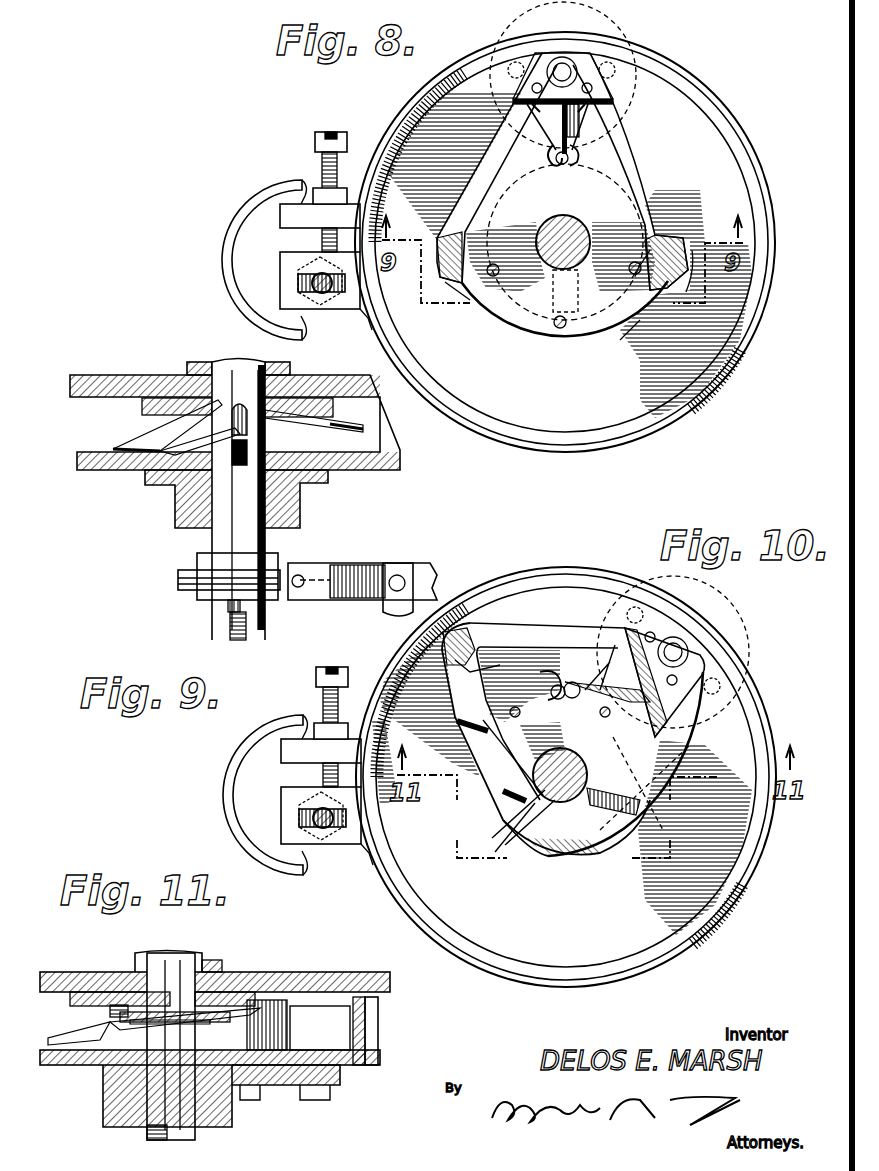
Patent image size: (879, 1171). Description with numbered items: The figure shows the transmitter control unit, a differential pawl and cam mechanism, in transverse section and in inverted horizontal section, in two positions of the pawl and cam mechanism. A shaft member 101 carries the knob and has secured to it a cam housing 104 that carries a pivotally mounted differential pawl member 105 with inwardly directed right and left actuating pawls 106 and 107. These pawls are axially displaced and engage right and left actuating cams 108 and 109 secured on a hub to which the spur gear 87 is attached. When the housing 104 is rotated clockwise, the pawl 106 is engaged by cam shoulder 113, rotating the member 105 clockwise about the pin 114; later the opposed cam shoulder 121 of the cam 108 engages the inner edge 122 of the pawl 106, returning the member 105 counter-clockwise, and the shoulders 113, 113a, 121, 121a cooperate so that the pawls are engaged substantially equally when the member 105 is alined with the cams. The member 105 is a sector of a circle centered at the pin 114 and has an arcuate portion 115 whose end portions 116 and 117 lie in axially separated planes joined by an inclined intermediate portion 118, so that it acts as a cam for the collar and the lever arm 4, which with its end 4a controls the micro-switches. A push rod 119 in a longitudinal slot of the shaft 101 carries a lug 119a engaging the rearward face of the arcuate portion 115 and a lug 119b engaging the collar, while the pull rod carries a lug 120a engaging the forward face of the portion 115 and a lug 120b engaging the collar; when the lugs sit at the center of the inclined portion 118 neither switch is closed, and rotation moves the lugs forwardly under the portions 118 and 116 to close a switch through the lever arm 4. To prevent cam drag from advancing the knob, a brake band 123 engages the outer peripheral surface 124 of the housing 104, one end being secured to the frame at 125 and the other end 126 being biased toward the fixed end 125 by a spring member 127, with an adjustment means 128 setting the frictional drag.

In FIG. 9, the lever arm 4 is at (350, 575).
In FIG. 9, the lever arm end tab 4a is at (400, 575).
In FIG. 11, the spur gear 87 is at (392, 982).
In FIG. 8, the shaft member 101 is at (585, 225).
In FIG. 9, the shaft member 101 is at (214, 625).
In FIG. 10, the shaft member 101 is at (580, 755).
In FIG. 11, the shaft member 101 is at (175, 953).
In FIG. 8, the cam housing 104 is at (711, 135).
In FIG. 9, the cam housing 104 is at (355, 465).
In FIG. 10, the cam housing 104 is at (745, 752).
In FIG. 11, the cam housing 104 is at (320, 1045).
In FIG. 8, the differential pawl member 105 is at (690, 138).
In FIG. 10, the differential pawl member 105 is at (545, 630).
In FIG. 8, the right actuating pawl 106 is at (572, 140).
In FIG. 10, the right actuating pawl 106 is at (601, 721).
In FIG. 8, the left actuating pawl 107 is at (548, 115).
In FIG. 10, the left actuating pawl 107 is at (598, 630).
In FIG. 8, the right actuating cam 108 is at (640, 265).
In FIG. 10, the right actuating cam 108 is at (655, 745).
In FIG. 8, the left actuating cam 109 is at (553, 157).
In FIG. 10, the left actuating cam 109 is at (625, 815).
In FIG. 8, the cam shoulder 113 is at (574, 160).
In FIG. 10, the cam shoulder 113 is at (537, 716).
In FIG. 8, the cam shoulder 113a is at (562, 164).
In FIG. 10, the cam shoulder 113a is at (554, 696).
In FIG. 8, the pin 114 is at (562, 72).
In FIG. 10, the pin 114 is at (673, 652).
In FIG. 8, the arcuate portion 115 is at (690, 280).
In FIG. 8, the end portion 116 is at (630, 335).
In FIG. 9, the end portion 116 is at (330, 430).
In FIG. 10, the end portion 116 is at (520, 815).
In FIG. 11, the end portion 116 is at (130, 1025).
In FIG. 8, the end portion 117 is at (462, 297).
In FIG. 9, the end portion 117 is at (180, 440).
In FIG. 10, the end portion 117 is at (452, 665).
In FIG. 11, the end portion 117 is at (50, 1045).
In FIG. 9, the intermediate portion 118 is at (240, 432).
In FIG. 10, the intermediate portion 118 is at (497, 787).
In FIG. 11, the intermediate portion 118 is at (100, 1042).
In FIG. 11, the push rod 119 is at (150, 1118).
In FIG. 9, the lug 119a is at (300, 505).
In FIG. 11, the lug 119a is at (160, 1030).
In FIG. 9, the lug 119b is at (240, 560).
In FIG. 8, the lug 120a is at (565, 246).
In FIG. 9, the lug 120a is at (180, 475).
In FIG. 10, the lug 120a is at (545, 850).
In FIG. 11, the lug 120a is at (115, 1005).
In FIG. 9, the lug 120b is at (242, 606).
In FIG. 10, the cam shoulder 121 is at (533, 674).
In FIG. 10, the cam shoulder 121a is at (604, 674).
In FIG. 10, the inner edge 122 is at (582, 696).
In FIG. 8, the brake band 123 is at (613, 454).
In FIG. 10, the brake band 123 is at (622, 580).
In FIG. 11, the brake band 123 is at (366, 1012).
In FIG. 8, the outer peripheral surface 124 is at (680, 441).
In FIG. 10, the outer peripheral surface 124 is at (595, 570).
In FIG. 11, the outer peripheral surface 124 is at (378, 1032).
In FIG. 8, the fixed end 125 is at (345, 305).
In FIG. 10, the fixed end 125 is at (346, 840).
In FIG. 8, the other end 126 is at (300, 216).
In FIG. 10, the other end 126 is at (301, 751).
In FIG. 8, the spring member 127 is at (262, 208).
In FIG. 10, the spring member 127 is at (263, 743).
In FIG. 8, the adjustment means 128 is at (322, 145).
In FIG. 10, the adjustment means 128 is at (323, 680).